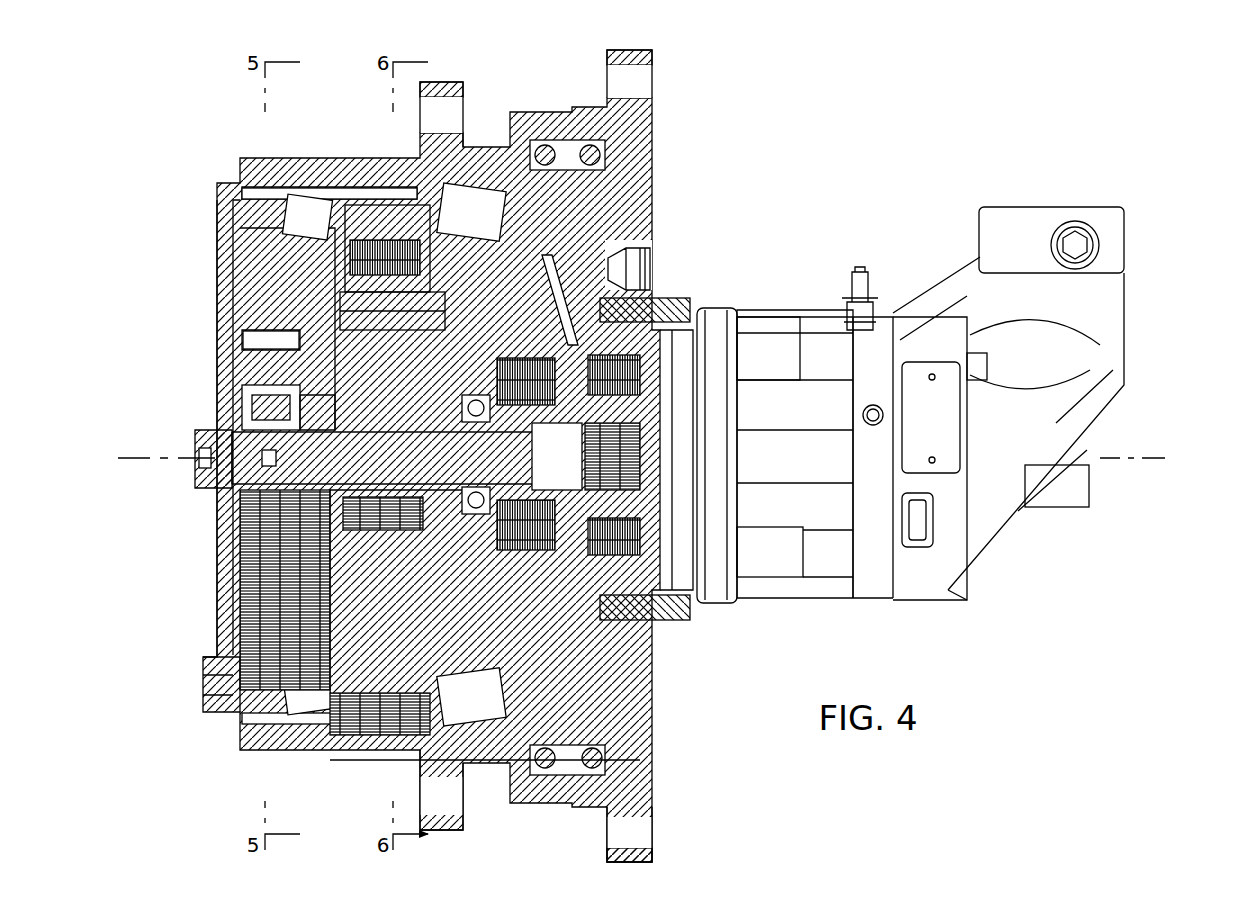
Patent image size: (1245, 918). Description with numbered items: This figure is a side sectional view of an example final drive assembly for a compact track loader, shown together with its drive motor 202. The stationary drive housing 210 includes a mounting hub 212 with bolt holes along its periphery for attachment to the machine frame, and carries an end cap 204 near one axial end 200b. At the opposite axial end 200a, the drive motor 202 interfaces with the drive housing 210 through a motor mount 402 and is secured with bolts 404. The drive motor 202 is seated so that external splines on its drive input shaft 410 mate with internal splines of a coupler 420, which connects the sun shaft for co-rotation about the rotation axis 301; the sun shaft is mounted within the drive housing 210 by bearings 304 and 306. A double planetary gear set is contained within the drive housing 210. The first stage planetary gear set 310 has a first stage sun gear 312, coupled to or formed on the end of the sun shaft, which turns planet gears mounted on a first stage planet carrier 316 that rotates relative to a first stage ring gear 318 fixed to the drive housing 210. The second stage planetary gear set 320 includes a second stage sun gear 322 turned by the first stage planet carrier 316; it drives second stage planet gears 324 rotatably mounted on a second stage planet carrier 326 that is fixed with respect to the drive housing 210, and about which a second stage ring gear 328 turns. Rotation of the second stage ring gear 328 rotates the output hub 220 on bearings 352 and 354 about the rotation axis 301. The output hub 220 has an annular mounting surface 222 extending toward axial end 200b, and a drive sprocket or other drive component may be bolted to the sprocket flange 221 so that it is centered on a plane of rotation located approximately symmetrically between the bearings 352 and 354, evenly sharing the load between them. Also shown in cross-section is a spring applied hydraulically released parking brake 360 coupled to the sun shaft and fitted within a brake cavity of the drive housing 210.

The axial end 200a is at (1152, 225).
The axial end 200b is at (155, 598).
The drive motor 202 is at (810, 243).
The end cap 204 is at (235, 538).
The drive housing 210 is at (640, 752).
The mounting hub 212 is at (653, 835).
The output hub 220 is at (456, 765).
The sprocket flange 221 is at (456, 117).
The annular mounting surface 222 is at (262, 740).
The rotation axis 301 is at (1128, 465).
The bearing 304 is at (215, 465).
The bearing 306 is at (680, 500).
The first stage planetary gear set 310 is at (312, 596).
The first stage sun gear 312 is at (275, 425).
The first stage planet carrier 316 is at (245, 360).
The first stage ring gear 318 is at (280, 625).
The second stage planetary gear set 320 is at (375, 536).
The second stage sun gear 322 is at (310, 420).
The second stage planet gears 324 is at (365, 215).
The second stage planet carrier 326 is at (350, 295).
The second stage ring gear 328 is at (345, 710).
The bearing 352 is at (300, 693).
The bearing 354 is at (485, 703).
The parking brake 360 is at (660, 328).
The motor mount 402 is at (672, 624).
The bolts 404 is at (690, 306).
The drive input shaft 410 is at (640, 425).
The coupler 420 is at (632, 462).